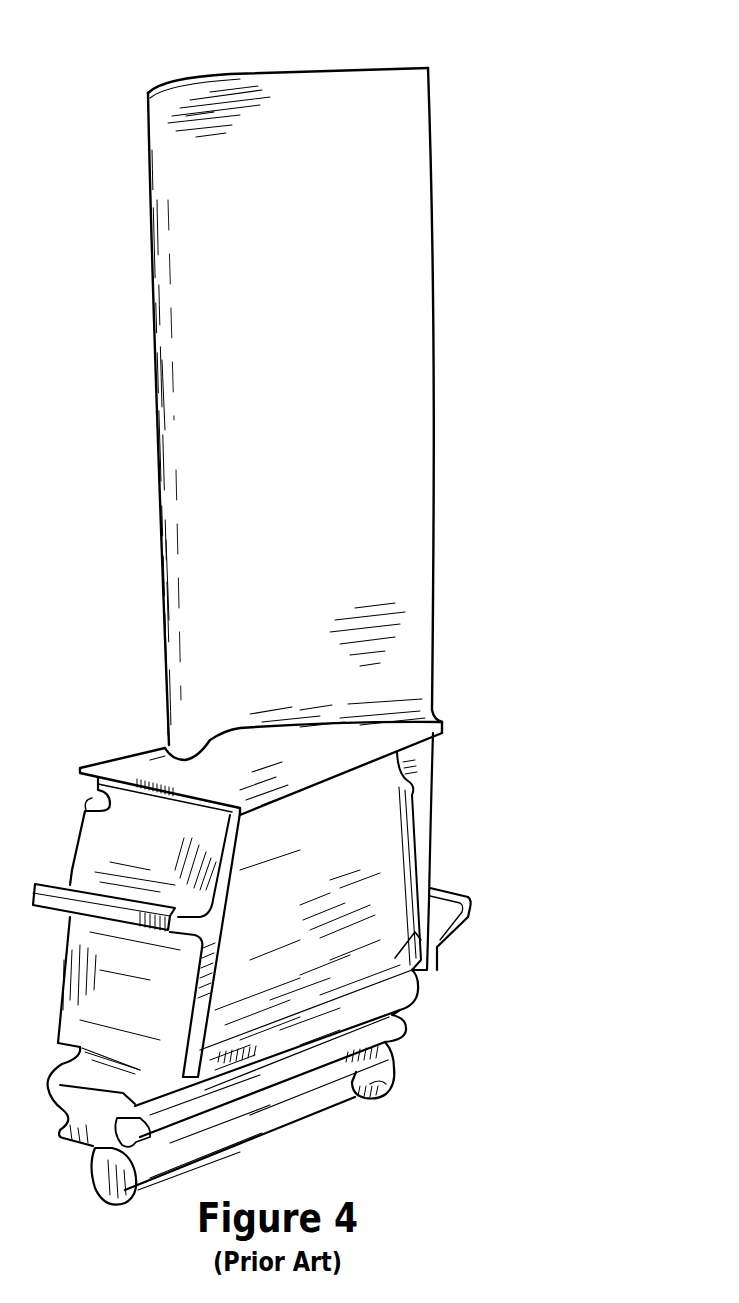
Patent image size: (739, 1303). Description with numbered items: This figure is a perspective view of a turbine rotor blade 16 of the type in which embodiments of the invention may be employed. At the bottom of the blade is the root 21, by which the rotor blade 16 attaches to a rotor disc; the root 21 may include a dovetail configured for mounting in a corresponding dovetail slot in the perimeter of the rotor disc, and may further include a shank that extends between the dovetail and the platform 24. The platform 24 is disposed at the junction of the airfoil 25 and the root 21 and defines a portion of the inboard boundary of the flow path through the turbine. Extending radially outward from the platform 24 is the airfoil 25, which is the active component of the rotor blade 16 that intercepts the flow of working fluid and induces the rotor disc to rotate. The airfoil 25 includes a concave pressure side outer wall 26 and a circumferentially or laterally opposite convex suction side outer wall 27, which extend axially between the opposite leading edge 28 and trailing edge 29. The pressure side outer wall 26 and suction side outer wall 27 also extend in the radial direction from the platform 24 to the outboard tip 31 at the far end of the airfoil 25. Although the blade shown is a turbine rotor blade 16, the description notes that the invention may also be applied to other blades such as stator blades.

The turbine rotor blade 16 is at (335, 603).
The root 21 is at (458, 1002).
The platform 24 is at (155, 784).
The airfoil 25 is at (487, 251).
The concave pressure side outer wall 26 is at (329, 373).
The convex suction side outer wall 27 is at (442, 520).
The leading edge 28 is at (158, 382).
The trailing edge 29 is at (434, 408).
The outboard tip 31 is at (228, 74).